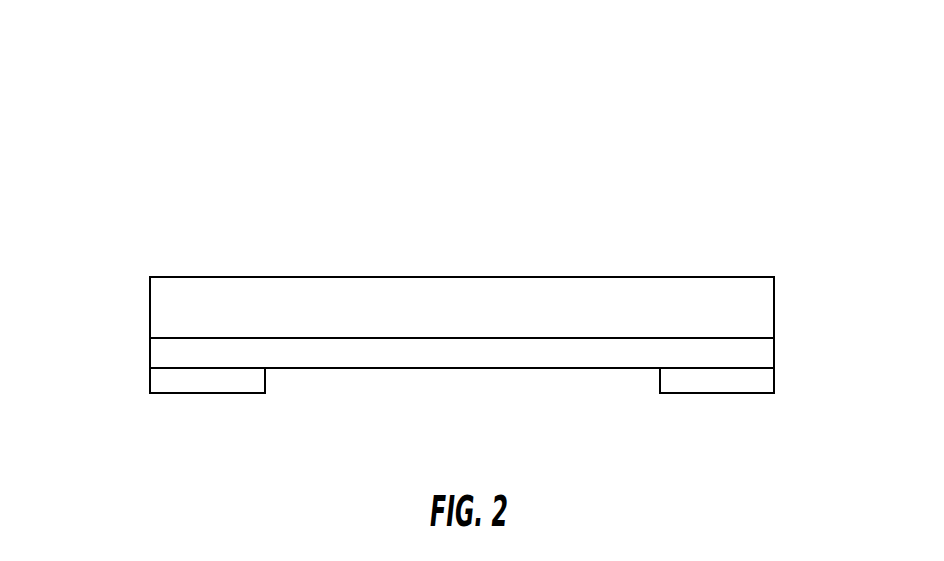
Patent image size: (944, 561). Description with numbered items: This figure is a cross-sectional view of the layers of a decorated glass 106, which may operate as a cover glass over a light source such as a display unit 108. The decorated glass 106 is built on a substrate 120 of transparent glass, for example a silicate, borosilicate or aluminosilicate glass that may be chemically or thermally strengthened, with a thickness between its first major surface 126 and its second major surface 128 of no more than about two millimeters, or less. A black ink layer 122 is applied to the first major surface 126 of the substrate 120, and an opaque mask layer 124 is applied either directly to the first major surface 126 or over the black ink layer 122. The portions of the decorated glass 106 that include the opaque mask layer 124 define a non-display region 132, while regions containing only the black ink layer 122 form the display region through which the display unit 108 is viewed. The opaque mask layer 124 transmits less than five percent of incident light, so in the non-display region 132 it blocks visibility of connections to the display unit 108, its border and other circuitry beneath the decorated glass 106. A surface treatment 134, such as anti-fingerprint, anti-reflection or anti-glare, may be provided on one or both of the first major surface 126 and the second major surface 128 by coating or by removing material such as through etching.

The decorated glass 106 is at (368, 100).
The display unit 108 is at (481, 420).
The substrate 120 is at (660, 292).
The black ink layer 122 is at (728, 345).
The opaque mask layer 124 is at (205, 393).
The first major surface 126 is at (275, 338).
The second major surface 128 is at (403, 275).
The non-display region 132 is at (537, 253).
The surface treatment 134 is at (177, 253).